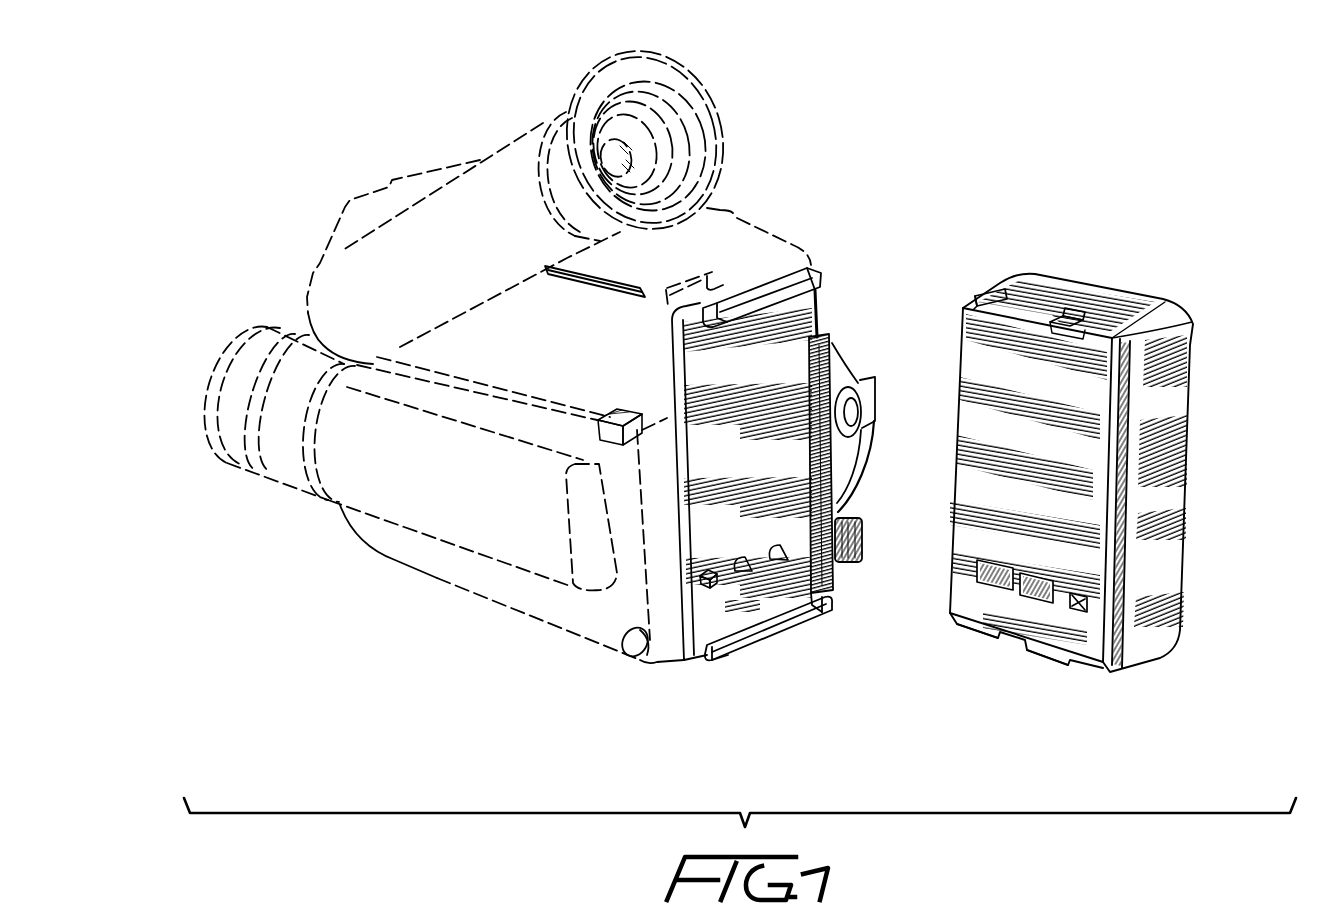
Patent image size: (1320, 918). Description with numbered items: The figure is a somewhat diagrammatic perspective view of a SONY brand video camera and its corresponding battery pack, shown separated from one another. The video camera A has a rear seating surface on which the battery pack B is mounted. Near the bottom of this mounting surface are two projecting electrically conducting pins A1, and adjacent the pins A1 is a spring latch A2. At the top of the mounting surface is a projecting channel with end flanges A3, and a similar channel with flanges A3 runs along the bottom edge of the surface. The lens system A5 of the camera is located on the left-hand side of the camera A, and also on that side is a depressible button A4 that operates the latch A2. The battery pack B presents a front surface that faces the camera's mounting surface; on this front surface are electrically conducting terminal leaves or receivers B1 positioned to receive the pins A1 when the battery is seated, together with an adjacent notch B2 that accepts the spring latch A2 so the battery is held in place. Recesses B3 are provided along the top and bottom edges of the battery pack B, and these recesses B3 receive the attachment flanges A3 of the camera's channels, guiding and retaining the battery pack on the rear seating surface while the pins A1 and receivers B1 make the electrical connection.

The video camera A is at (420, 557).
The electrically conducting pins A1 is at (743, 553).
The spring latch A2 is at (702, 567).
The end flanges A3 is at (816, 300).
The depressible button A4 is at (620, 410).
The lens system A5 is at (694, 138).
The battery pack B is at (1173, 483).
The terminal leaves B1 is at (1037, 580).
The notch B2 is at (1080, 600).
The recesses B3 is at (990, 293).